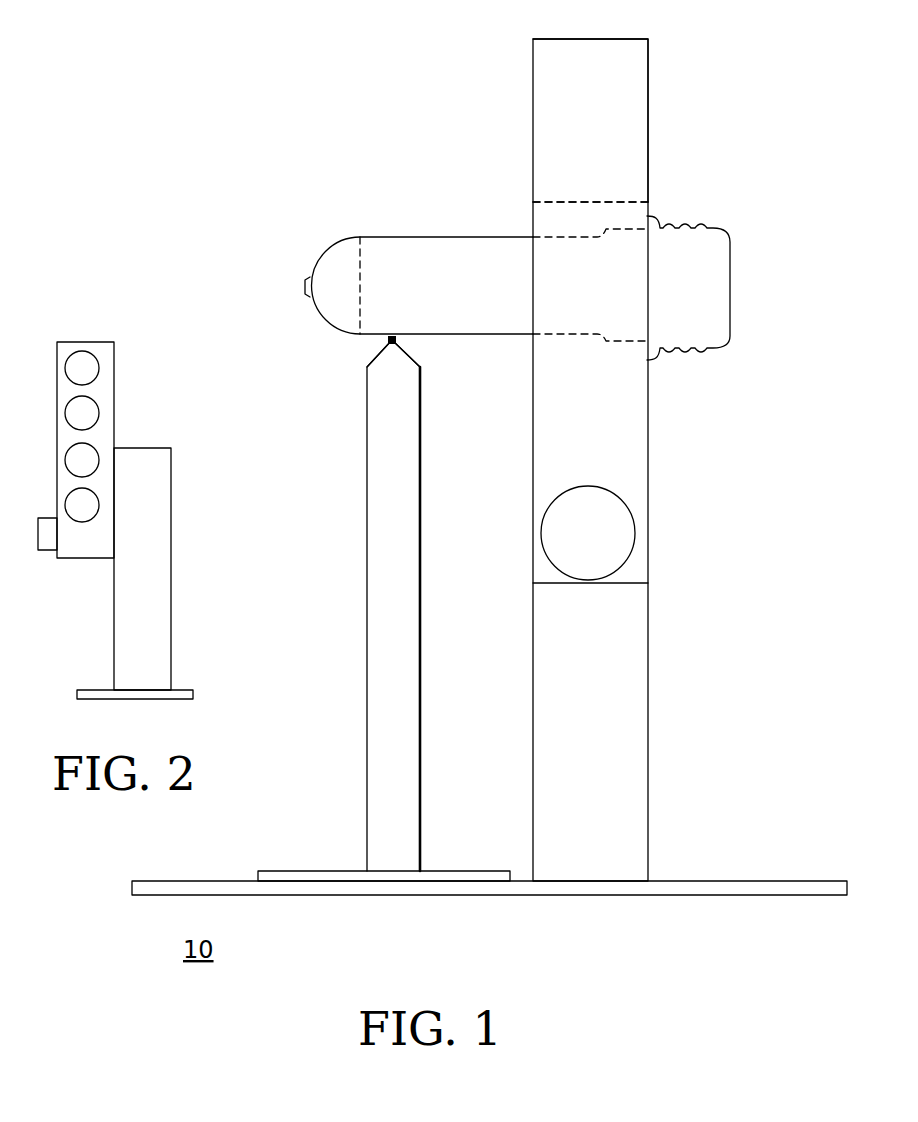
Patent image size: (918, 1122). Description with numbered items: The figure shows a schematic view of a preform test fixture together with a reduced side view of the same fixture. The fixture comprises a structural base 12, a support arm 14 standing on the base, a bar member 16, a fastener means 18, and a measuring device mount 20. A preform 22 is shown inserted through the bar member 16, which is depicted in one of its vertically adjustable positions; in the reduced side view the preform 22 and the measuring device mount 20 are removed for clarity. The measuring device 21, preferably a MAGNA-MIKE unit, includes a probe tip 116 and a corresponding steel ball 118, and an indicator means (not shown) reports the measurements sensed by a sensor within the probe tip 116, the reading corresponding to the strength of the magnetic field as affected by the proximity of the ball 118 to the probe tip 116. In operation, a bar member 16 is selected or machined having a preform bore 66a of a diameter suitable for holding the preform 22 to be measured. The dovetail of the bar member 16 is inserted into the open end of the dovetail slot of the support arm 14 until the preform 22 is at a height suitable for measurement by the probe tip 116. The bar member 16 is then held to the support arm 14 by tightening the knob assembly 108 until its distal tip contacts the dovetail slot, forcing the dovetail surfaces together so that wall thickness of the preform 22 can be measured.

In FIG. 1, the structural base 12 is at (382, 898).
In FIG. 1, the support arm 14 is at (612, 737).
In FIG. 2, the support arm 14 is at (142, 590).
In FIG. 1, the bar member 16 is at (620, 79).
In FIG. 2, the bar member 16 is at (103, 352).
In FIG. 1, the fastener means 18 is at (650, 532).
In FIG. 1, the measuring device mount 20 is at (385, 848).
In FIG. 1, the measuring device 21 is at (390, 534).
In FIG. 1, the preform 22 is at (450, 237).
In FIG. 1, the preform bore 66a is at (596, 215).
In FIG. 2, the knob assembly 108 is at (44, 553).
In FIG. 1, the probe tip 116 is at (392, 340).
In FIG. 1, the ball 118 is at (392, 340).